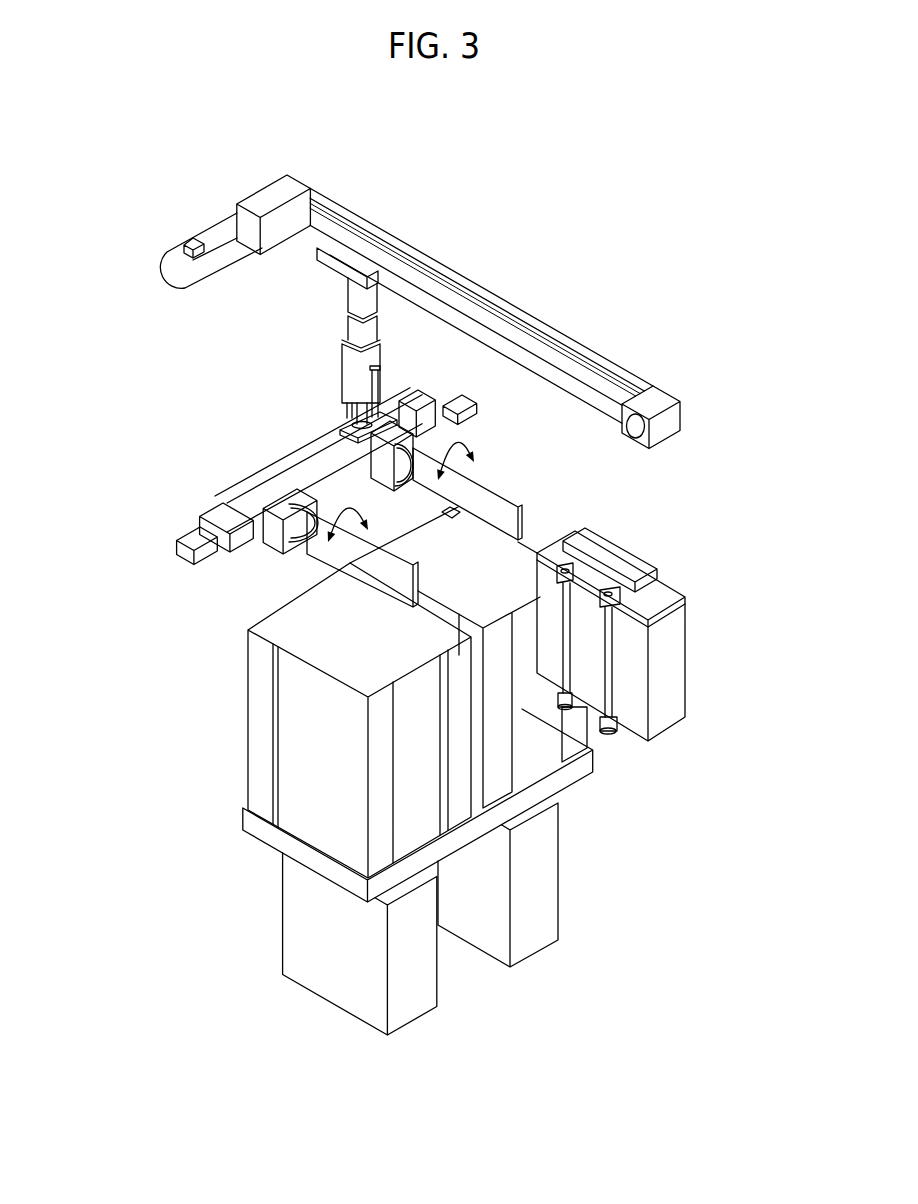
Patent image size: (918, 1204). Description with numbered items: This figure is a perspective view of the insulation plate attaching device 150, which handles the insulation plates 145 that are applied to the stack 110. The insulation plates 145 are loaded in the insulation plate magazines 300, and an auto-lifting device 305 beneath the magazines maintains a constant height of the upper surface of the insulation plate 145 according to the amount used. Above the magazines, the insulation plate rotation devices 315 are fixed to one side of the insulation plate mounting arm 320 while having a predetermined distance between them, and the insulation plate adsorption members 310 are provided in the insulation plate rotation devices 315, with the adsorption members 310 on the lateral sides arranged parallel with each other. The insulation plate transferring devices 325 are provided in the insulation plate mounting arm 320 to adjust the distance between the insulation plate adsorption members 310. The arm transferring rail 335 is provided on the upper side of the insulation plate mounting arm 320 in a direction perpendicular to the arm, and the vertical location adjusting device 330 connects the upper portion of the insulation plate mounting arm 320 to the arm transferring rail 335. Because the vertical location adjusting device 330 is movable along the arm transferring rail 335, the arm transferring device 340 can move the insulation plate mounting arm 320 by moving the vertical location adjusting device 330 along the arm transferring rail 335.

The stack 110 is at (700, 656).
The insulation plate 145 is at (352, 643).
The insulation plate attaching device 150 is at (156, 374).
The insulation plate magazine 300 is at (419, 814).
The auto-lifting device 305 is at (337, 975).
The insulation plate adsorption member 310 is at (320, 540).
The insulation plate rotation device 315 is at (293, 499).
The insulation plate mounting arm 320 is at (258, 482).
The insulation plate transferring device 325 is at (453, 387).
The vertical location adjusting device 330 is at (333, 278).
The arm transferring rail 335 is at (463, 277).
The arm transferring device 340 is at (205, 237).